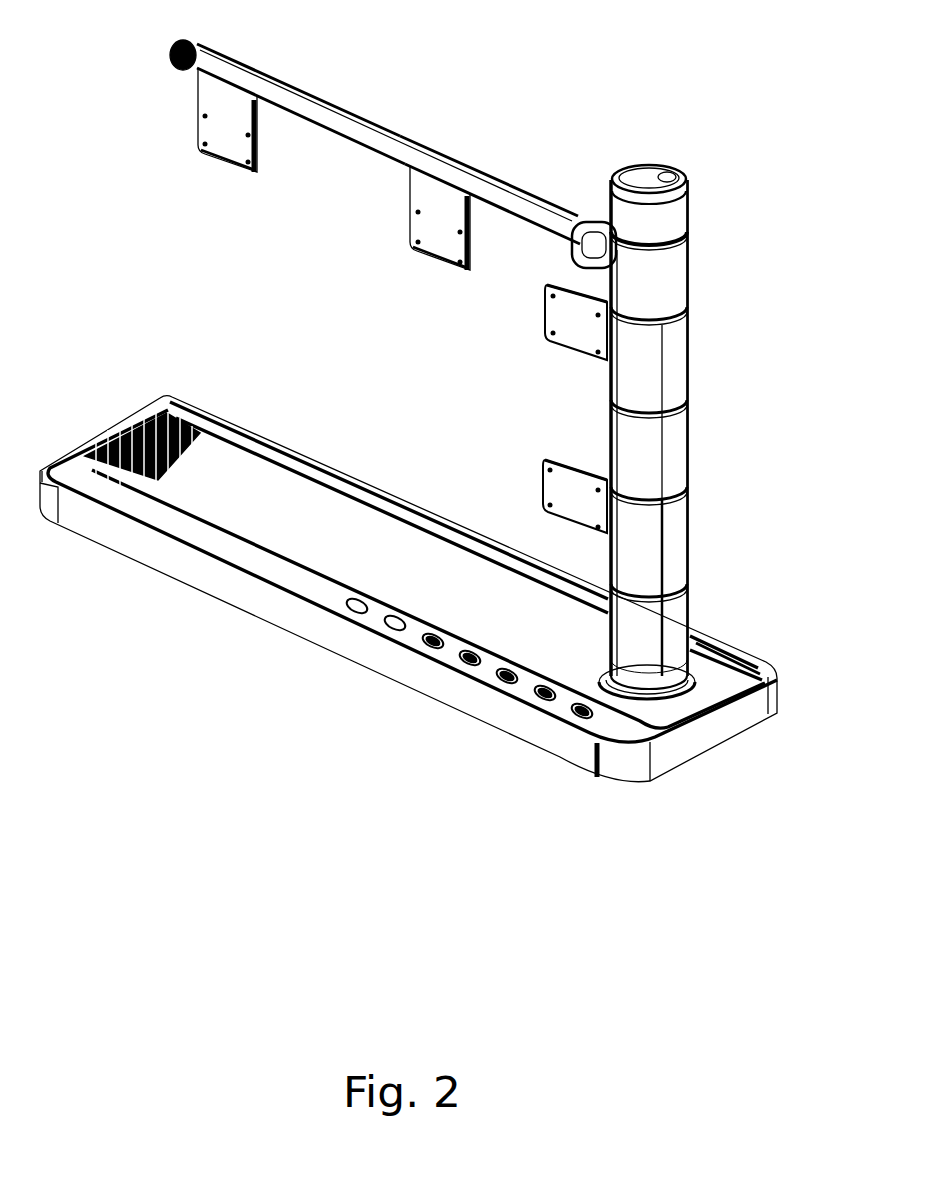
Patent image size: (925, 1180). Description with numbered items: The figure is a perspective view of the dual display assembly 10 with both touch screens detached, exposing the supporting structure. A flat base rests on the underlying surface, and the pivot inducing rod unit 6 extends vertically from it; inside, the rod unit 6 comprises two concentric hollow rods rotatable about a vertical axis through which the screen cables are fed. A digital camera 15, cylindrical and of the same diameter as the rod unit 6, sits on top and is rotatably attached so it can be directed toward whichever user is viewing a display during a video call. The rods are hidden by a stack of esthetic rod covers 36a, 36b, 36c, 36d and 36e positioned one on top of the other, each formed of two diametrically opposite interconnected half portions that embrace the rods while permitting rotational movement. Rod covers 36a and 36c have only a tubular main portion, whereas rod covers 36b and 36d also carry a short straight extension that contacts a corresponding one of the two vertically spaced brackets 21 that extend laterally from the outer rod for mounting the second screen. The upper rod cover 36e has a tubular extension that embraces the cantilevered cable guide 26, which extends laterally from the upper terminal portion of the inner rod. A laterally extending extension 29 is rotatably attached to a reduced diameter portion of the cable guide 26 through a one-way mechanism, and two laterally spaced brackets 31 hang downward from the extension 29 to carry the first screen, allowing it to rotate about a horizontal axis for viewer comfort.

The dual display assembly 10 is at (486, 100).
The pivot inducing rod unit 6 is at (700, 578).
The digital camera 15 is at (665, 220).
The rod cover 36a is at (667, 630).
The rod cover 36b is at (620, 567).
The rod cover 36c is at (653, 470).
The rod cover 36d is at (667, 360).
The upper rod cover 36e is at (665, 280).
The extension 29 is at (345, 123).
The cable guide 26 is at (540, 220).
The brackets 31 is at (427, 240).
The brackets 21 is at (572, 322).